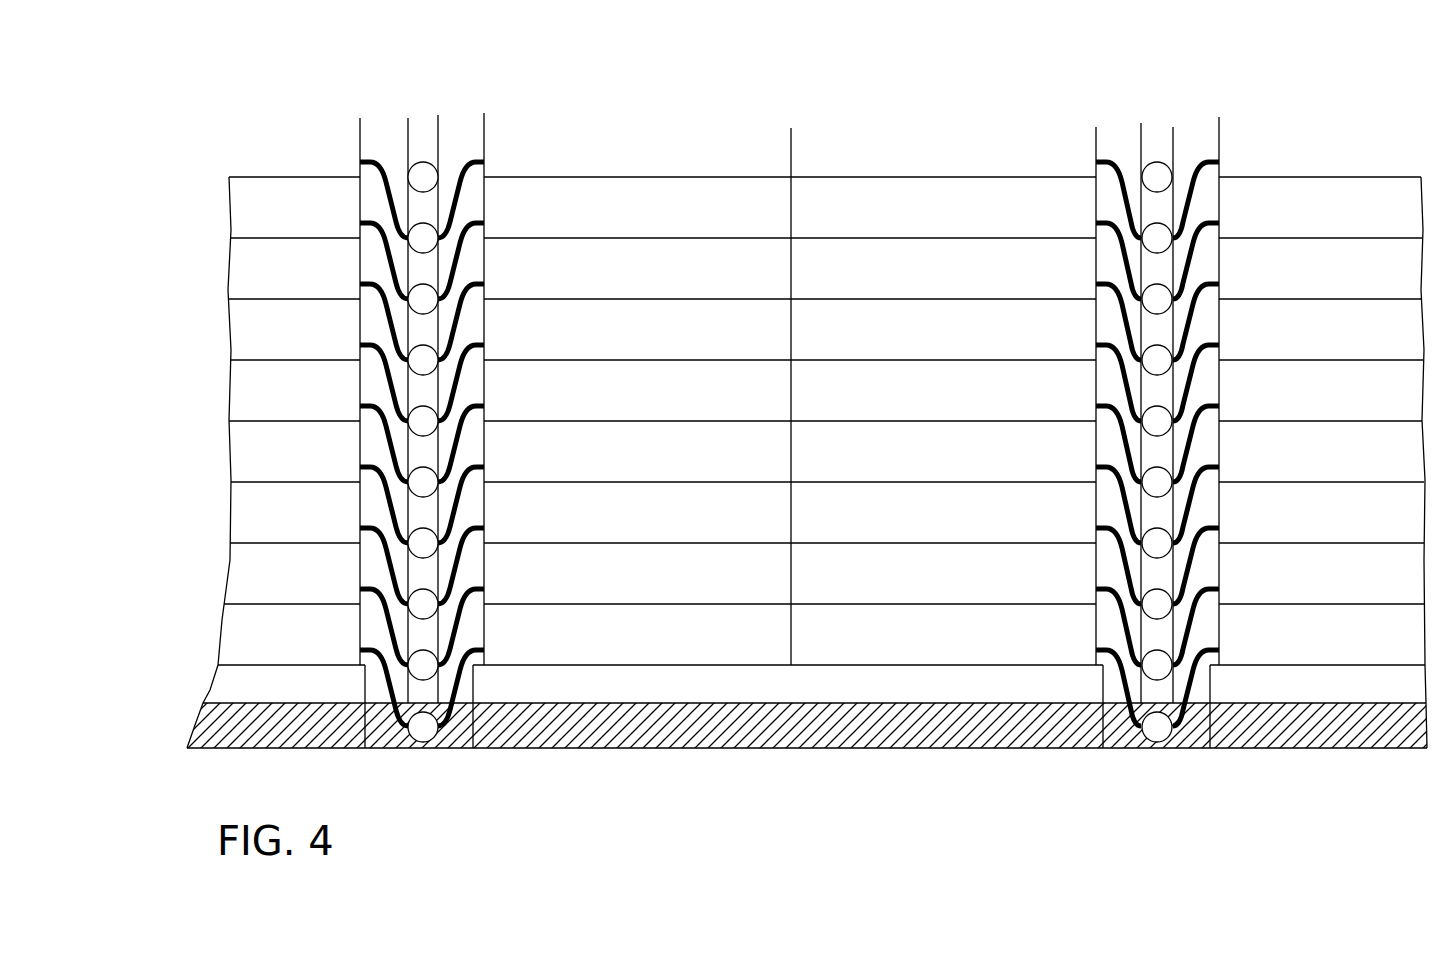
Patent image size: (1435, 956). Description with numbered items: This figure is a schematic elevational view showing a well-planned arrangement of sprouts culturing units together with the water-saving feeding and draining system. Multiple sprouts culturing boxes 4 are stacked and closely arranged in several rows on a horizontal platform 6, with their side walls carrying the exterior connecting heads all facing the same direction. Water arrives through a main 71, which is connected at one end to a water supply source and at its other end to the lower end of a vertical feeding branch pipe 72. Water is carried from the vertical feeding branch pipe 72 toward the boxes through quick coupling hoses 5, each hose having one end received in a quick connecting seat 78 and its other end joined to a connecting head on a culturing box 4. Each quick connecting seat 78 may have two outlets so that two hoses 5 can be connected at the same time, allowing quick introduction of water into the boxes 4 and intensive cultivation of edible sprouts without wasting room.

The sprouts culturing box 4 is at (667, 200).
The quick coupling hose 5 is at (381, 158).
The horizontal platform 6 is at (865, 735).
The main 71 is at (427, 732).
The vertical feeding branch pipe 72 is at (425, 128).
The quick connecting seat 78 is at (1140, 583).